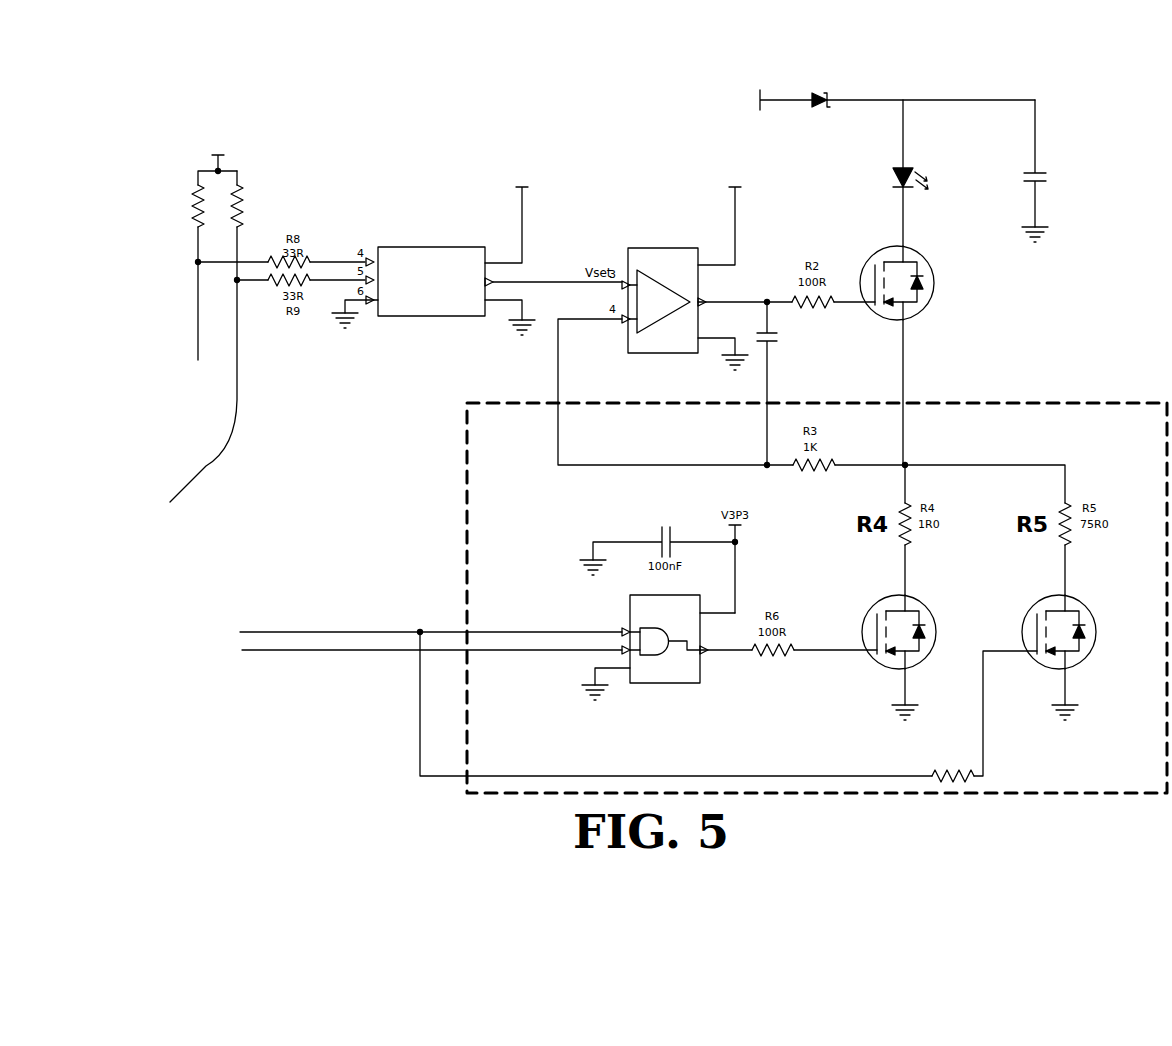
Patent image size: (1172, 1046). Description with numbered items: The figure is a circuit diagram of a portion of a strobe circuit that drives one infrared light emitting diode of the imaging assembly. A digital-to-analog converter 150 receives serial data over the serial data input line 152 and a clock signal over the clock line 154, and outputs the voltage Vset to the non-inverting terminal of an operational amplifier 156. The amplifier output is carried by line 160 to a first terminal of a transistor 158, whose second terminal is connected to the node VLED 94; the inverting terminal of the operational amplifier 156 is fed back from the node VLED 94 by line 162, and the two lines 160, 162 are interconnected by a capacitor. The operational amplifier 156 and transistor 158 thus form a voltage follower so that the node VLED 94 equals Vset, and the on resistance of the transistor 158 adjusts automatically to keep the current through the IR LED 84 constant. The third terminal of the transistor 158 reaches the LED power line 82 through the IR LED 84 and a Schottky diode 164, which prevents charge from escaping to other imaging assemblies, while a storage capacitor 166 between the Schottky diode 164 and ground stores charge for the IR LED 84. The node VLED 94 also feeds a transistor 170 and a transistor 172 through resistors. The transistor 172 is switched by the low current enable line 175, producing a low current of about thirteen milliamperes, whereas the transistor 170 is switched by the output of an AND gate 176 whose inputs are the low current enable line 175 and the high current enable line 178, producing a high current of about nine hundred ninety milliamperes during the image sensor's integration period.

The LED power line 82 is at (772, 99).
The IR LED 84 is at (888, 178).
The node VLED 94 is at (910, 465).
The digital-to-analog converter 150 is at (433, 260).
The serial data input line 152 is at (198, 318).
The clock line 154 is at (199, 353).
The operational amplifier 156 is at (653, 287).
The transistor 158 is at (912, 313).
The line 160 is at (733, 295).
The line 162 is at (570, 467).
The Schottky diode 164 is at (832, 98).
The storage capacitor 166 is at (1047, 172).
The transistor 170 is at (922, 605).
The transistor 172 is at (1082, 605).
The low current enable line 175 is at (250, 631).
The AND gate 176 is at (708, 663).
The high current enable line 178 is at (242, 651).